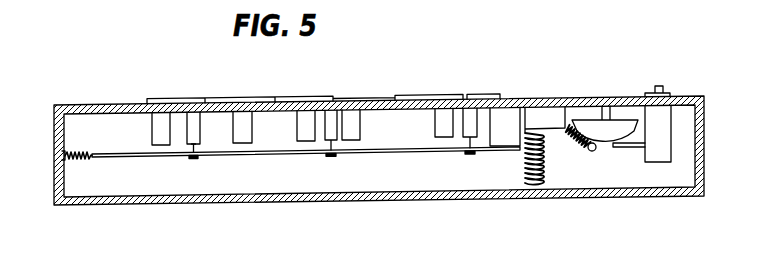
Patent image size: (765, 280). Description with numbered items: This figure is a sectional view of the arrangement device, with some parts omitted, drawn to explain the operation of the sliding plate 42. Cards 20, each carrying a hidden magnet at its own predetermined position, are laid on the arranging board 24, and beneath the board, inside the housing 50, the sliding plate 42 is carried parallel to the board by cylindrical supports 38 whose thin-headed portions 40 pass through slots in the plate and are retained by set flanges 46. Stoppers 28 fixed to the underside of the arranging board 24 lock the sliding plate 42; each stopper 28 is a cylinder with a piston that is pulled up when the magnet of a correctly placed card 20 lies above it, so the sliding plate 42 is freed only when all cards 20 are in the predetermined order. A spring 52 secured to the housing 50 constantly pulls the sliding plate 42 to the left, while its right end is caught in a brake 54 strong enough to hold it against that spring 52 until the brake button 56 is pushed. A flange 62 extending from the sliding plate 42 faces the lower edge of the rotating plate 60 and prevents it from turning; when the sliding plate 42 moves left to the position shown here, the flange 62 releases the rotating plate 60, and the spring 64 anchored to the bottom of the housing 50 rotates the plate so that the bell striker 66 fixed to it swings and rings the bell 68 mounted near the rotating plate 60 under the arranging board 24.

The card 20 is at (257, 97).
The arranging board 24 is at (124, 105).
The stopper 28 is at (161, 125).
The cylindrical support 38 is at (328, 125).
The thin-headed portion 40 is at (197, 150).
The sliding plate 42 is at (388, 156).
The set flange 46 is at (193, 160).
The housing 50 is at (55, 157).
The spring 52 is at (85, 161).
The brake 54 is at (657, 163).
The brake button 56 is at (659, 86).
The rotating plate 60 is at (553, 112).
The flange 62 is at (498, 110).
The spring 64 is at (526, 163).
The bell striker 66 is at (583, 147).
The bell 68 is at (619, 120).